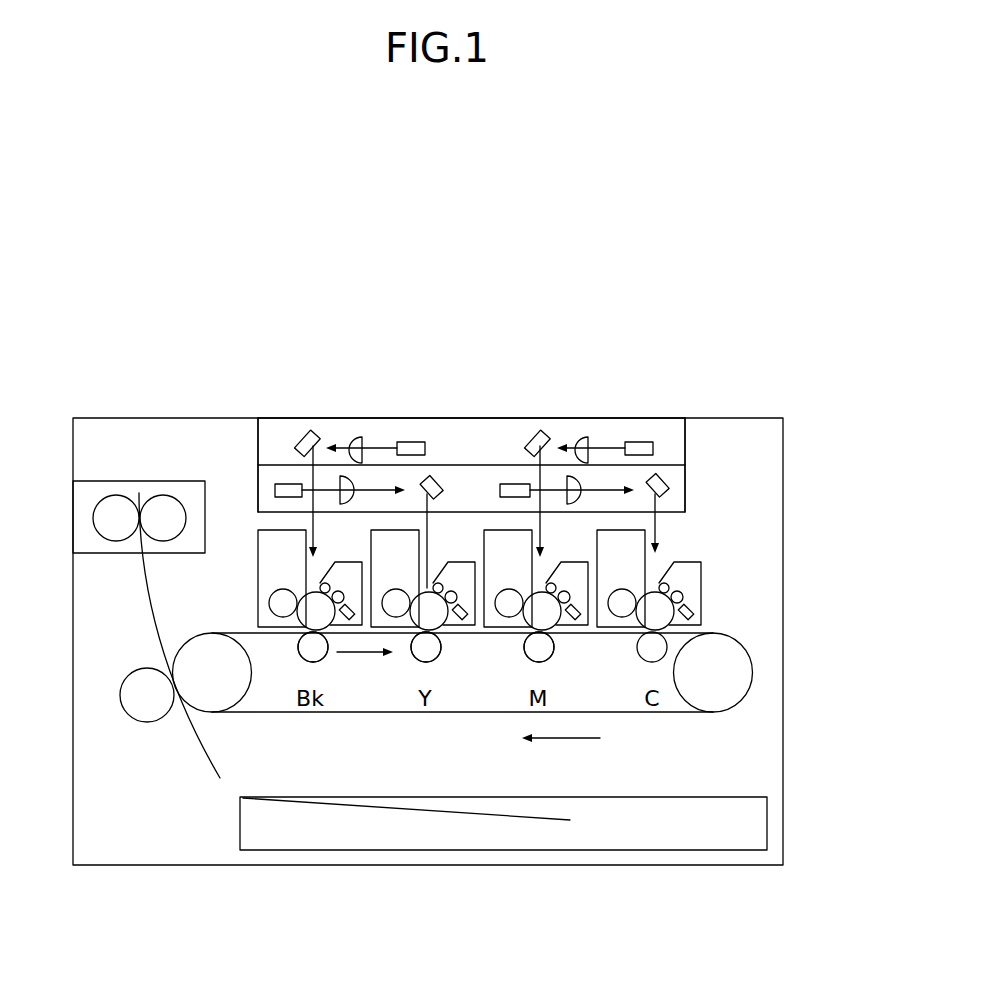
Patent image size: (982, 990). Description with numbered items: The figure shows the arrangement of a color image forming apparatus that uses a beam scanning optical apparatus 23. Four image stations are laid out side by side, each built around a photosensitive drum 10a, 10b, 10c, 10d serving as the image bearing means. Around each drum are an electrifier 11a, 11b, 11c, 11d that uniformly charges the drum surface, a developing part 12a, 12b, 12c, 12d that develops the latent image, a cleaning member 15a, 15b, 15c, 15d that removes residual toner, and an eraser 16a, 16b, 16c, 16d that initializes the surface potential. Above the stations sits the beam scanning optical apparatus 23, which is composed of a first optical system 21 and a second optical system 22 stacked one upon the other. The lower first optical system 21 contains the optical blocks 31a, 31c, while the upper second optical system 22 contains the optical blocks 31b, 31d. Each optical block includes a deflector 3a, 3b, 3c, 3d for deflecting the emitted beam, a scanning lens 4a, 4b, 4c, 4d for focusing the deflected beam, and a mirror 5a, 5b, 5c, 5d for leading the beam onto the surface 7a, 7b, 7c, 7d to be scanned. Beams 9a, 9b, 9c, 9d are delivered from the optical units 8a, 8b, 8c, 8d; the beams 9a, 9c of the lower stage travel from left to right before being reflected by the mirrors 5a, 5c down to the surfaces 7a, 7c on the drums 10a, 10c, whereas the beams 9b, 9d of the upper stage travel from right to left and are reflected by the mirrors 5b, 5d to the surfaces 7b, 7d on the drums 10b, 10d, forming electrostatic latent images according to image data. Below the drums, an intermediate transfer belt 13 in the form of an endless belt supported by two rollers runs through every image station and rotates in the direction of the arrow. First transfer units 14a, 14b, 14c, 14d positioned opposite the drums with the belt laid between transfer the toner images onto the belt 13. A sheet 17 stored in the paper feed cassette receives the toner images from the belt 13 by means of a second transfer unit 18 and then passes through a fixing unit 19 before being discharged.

The deflector 3a is at (258, 487).
The deflector 3b is at (408, 442).
The deflector 3c is at (520, 500).
The deflector 3d is at (647, 442).
The scanning lens 4a is at (346, 439).
The scanning lens 4b is at (346, 476).
The scanning lens 4c is at (583, 498).
The scanning lens 4d is at (582, 432).
The mirror 5a is at (440, 480).
The mirror 5b is at (304, 437).
The mirror 5c is at (670, 482).
The mirror 5d is at (536, 436).
The surface to be scanned 7a is at (442, 660).
The surface to be scanned 7b is at (318, 592).
The surface to be scanned 7c is at (643, 592).
The surface to be scanned 7d is at (556, 628).
The optical unit 8a is at (258, 417).
The optical unit 8b is at (365, 465).
The optical unit 8c is at (763, 417).
The optical unit 8d is at (617, 462).
The beam 9a is at (380, 488).
The beam 9b is at (313, 530).
The beam 9c is at (658, 555).
The beam 9d is at (607, 445).
The photosensitive drum 10a is at (420, 657).
The photosensitive drum 10b is at (305, 640).
The photosensitive drum 10c is at (662, 650).
The photosensitive drum 10d is at (527, 659).
The electrifier 11a is at (447, 582).
The electrifier 11b is at (337, 577).
The electrifier 11c is at (706, 580).
The electrifier 11d is at (565, 563).
The developing part 12a is at (394, 608).
The developing part 12b is at (287, 603).
The developing part 12c is at (628, 604).
The developing part 12d is at (512, 618).
The intermediate transfer belt 13 is at (680, 713).
The first transfer unit 14a is at (437, 660).
The first transfer unit 14b is at (296, 658).
The first transfer unit 14c is at (700, 713).
The first transfer unit 14d is at (552, 656).
The cleaning member 15a is at (463, 620).
The cleaning member 15b is at (345, 620).
The cleaning member 15c is at (690, 611).
The cleaning member 15d is at (582, 620).
The eraser 16a is at (455, 592).
The eraser 16b is at (343, 592).
The eraser 16c is at (672, 597).
The eraser 16d is at (571, 600).
The sheet 17 is at (203, 752).
The second transfer unit 18 is at (129, 693).
The fixing unit 19 is at (82, 522).
The first optical system 21 is at (476, 477).
The second optical system 22 is at (428, 417).
The beam scanning optical apparatus 23 is at (690, 452).
The optical block 31a is at (260, 507).
The optical block 31b is at (282, 483).
The optical block 31c is at (690, 475).
The optical block 31d is at (565, 436).